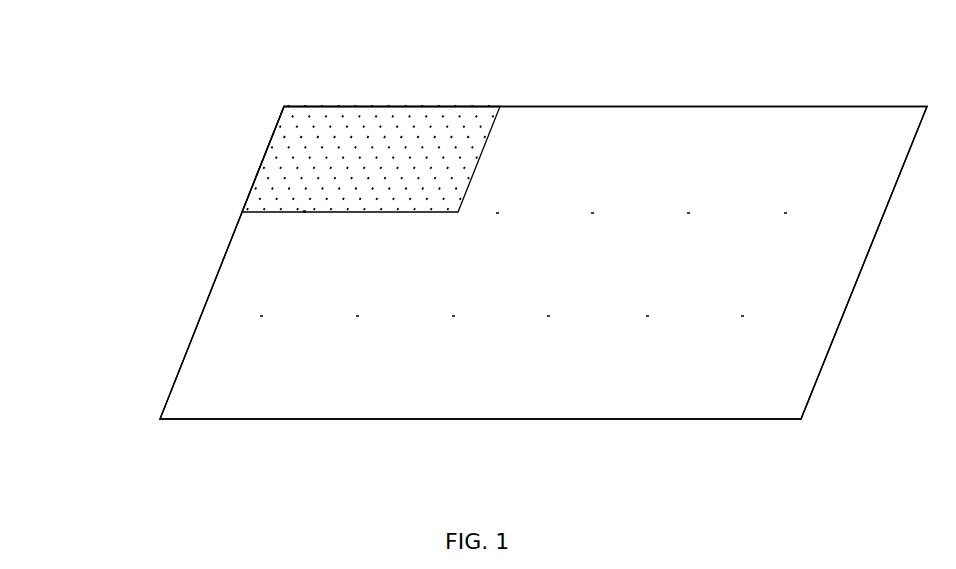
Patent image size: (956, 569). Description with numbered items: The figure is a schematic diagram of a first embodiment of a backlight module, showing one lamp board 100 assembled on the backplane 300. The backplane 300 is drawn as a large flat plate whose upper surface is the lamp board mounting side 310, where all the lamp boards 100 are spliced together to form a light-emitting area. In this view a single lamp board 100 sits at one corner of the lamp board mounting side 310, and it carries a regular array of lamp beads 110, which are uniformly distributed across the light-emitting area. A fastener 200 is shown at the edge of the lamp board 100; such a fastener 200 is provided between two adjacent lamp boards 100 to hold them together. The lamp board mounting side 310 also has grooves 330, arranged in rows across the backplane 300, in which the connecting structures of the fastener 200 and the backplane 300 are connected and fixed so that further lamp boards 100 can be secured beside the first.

The lamp board 100 is at (455, 115).
The lamp beads 110 is at (363, 115).
The fastener 200 is at (305, 212).
The backplane 300 is at (188, 422).
The lamp board mounting side 310 is at (218, 370).
The groove 330 is at (260, 317).